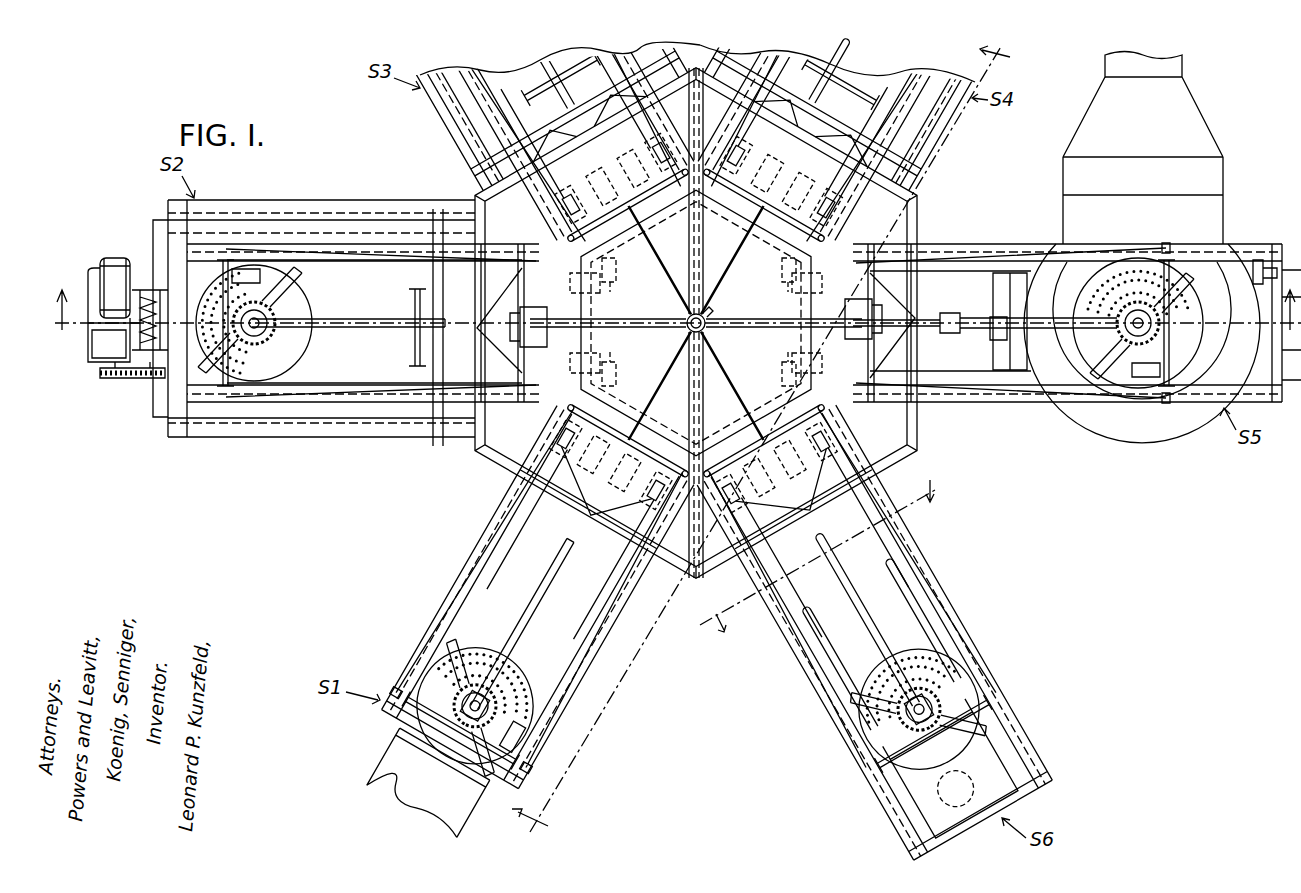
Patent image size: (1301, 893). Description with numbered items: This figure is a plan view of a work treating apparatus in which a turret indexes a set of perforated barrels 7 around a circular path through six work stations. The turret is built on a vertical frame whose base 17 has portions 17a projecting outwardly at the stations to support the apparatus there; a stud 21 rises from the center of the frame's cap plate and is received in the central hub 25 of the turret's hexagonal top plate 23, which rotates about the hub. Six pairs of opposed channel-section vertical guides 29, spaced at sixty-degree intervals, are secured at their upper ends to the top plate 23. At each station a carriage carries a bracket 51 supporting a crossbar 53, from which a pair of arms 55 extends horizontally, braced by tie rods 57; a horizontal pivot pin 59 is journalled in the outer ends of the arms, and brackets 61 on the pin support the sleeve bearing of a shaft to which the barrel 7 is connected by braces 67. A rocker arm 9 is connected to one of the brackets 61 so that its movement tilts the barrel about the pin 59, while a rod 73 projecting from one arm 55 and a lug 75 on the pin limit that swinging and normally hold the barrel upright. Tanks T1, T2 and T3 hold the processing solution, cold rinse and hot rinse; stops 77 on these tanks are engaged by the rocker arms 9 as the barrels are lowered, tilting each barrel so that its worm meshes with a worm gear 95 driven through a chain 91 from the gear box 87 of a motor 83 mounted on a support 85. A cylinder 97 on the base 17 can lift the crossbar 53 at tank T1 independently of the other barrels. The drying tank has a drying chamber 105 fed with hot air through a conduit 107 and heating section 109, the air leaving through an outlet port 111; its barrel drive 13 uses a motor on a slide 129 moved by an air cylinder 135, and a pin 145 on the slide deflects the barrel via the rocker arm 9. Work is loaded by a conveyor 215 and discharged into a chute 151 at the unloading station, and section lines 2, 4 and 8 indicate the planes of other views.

The section line 2- 2 is at (772, 444).
The section line 4- 4 is at (674, 324).
The section line 8- 8 is at (818, 544).
The perforated barrel 7 is at (306, 359).
The rocker arm 9 is at (348, 323).
The drive 13 is at (1291, 325).
The base 17 is at (482, 452).
The base portions 17a is at (156, 412).
The stud 21 is at (686, 327).
The hexagonal top plate 23 is at (580, 390).
The central hub 25 is at (711, 313).
The vertical guide 29 is at (796, 366).
The bracket 51 is at (610, 425).
The crossbar 53 is at (870, 330).
The arms 55 is at (1008, 244).
The tie rods 57 is at (966, 258).
The pivot pin 59 is at (1162, 332).
The brackets 61 is at (472, 732).
The braces 67 is at (1188, 278).
The rod 73 is at (1160, 386).
The lug 75 is at (1148, 380).
The stop 77 is at (416, 345).
The motor 83 is at (115, 262).
The support 85 is at (90, 290).
The gear box 87 is at (94, 350).
The chain 91 is at (128, 378).
The worm gear 95 is at (146, 295).
The cylinder 97 is at (520, 310).
The drying chamber 105 is at (1068, 310).
The conduit 107 is at (1176, 92).
The heating section 109 is at (1212, 176).
The outlet port 111 is at (1252, 288).
The slide 129 is at (996, 282).
The air cylinder 135 is at (940, 328).
The pin 145 is at (1000, 338).
The chute 151 is at (1010, 762).
The conveyor 215 is at (380, 770).
The tank T1 is at (262, 438).
The tank T2 is at (430, 106).
The tank T3 is at (922, 150).